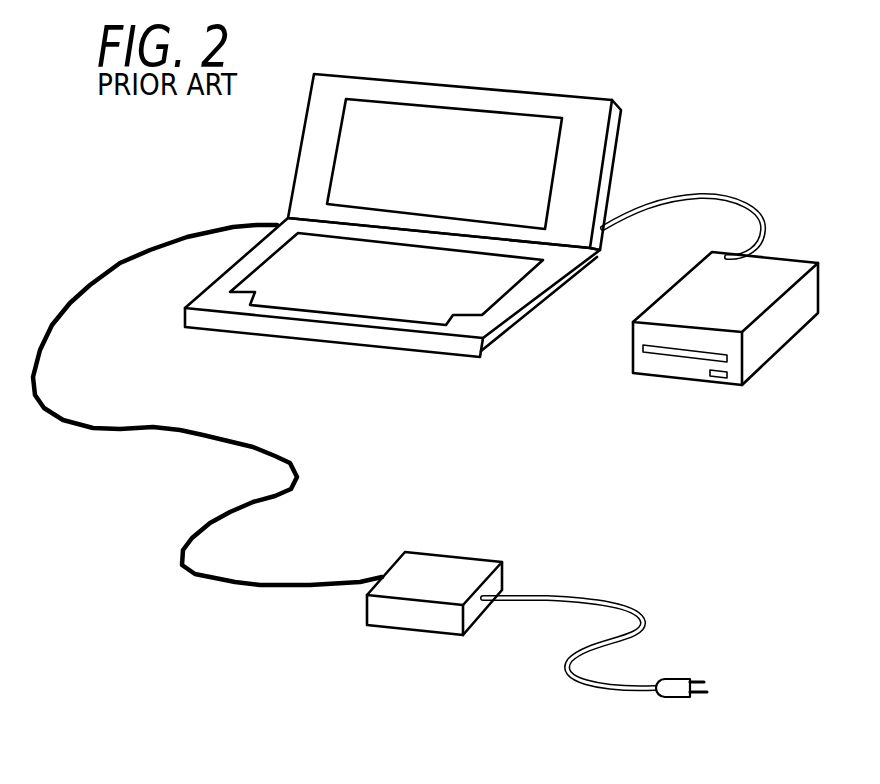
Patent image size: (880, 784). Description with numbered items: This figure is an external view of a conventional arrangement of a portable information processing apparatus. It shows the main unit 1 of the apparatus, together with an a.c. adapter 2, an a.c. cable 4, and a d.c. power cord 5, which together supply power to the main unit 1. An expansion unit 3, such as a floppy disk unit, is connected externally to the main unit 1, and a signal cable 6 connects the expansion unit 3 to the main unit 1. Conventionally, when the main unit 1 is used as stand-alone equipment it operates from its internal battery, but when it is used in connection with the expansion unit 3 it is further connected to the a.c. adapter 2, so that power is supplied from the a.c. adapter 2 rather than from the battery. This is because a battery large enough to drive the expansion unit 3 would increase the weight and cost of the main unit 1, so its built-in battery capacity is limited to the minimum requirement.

The main unit 1 is at (550, 103).
The a.c. adapter 2 is at (453, 567).
The expansion unit 3 is at (780, 272).
The a.c. cable 4 is at (623, 608).
The d.c. power cord 5 is at (263, 445).
The signal cable 6 is at (704, 196).